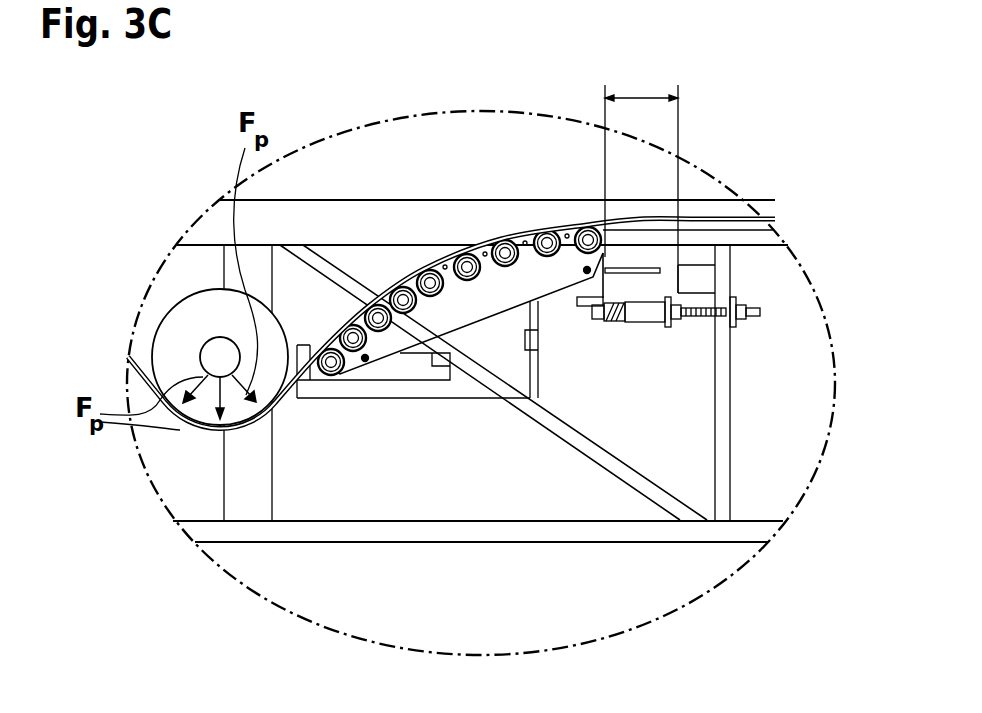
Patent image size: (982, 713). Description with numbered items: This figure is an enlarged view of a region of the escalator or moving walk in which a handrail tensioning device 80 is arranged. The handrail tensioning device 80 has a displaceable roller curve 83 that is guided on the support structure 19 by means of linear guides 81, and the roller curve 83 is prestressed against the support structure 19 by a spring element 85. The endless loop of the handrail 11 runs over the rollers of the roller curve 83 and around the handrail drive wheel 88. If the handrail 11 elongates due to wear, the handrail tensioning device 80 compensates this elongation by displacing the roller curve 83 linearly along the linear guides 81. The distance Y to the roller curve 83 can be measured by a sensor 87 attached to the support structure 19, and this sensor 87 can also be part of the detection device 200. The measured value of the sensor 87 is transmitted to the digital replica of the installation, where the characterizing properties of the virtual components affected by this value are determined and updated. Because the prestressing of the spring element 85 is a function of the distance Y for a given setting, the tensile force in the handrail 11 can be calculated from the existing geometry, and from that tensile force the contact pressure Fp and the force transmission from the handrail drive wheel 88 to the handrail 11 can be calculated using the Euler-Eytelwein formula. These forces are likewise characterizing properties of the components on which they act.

The handrail 11 is at (441, 253).
The support structure 19 is at (725, 397).
The handrail tensioning device 80 is at (546, 262).
The linear guides 81 is at (358, 381).
The roller curve 83 is at (477, 296).
The spring element 85 is at (623, 321).
The sensor 87 is at (702, 280).
The handrail drive wheel 88 is at (178, 333).
The detection device 200 is at (697, 249).